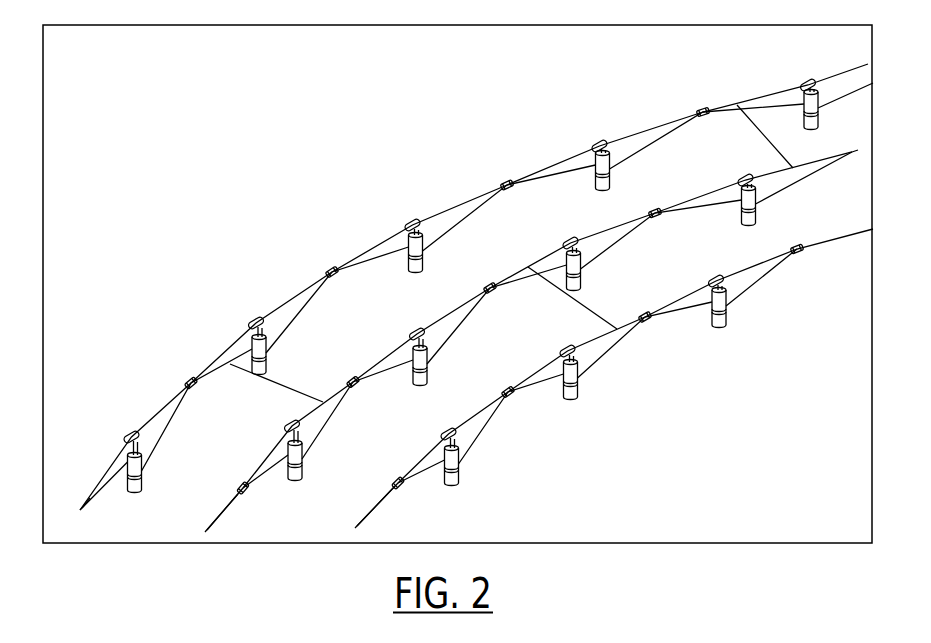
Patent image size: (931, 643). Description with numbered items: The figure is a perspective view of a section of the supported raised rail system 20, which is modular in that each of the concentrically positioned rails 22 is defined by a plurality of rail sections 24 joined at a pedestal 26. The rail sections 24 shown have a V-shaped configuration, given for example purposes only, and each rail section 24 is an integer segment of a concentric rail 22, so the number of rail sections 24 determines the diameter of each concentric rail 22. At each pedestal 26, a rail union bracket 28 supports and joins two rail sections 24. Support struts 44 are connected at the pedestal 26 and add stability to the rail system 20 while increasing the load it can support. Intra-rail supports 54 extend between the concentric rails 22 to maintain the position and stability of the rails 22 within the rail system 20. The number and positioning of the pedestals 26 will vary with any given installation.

The rail system 20 is at (338, 126).
The concentric rail 22 is at (810, 163).
The rail section 24 is at (376, 247).
The pedestal 26 is at (422, 258).
The rail union bracket 28 is at (430, 340).
The support strut 44 is at (388, 263).
The intra-rail support 54 is at (283, 392).